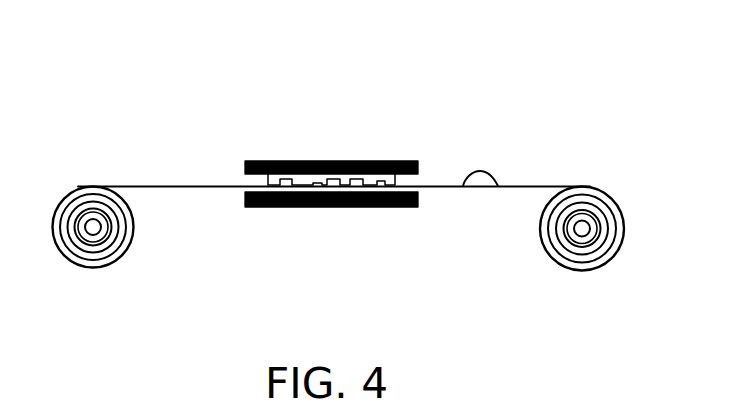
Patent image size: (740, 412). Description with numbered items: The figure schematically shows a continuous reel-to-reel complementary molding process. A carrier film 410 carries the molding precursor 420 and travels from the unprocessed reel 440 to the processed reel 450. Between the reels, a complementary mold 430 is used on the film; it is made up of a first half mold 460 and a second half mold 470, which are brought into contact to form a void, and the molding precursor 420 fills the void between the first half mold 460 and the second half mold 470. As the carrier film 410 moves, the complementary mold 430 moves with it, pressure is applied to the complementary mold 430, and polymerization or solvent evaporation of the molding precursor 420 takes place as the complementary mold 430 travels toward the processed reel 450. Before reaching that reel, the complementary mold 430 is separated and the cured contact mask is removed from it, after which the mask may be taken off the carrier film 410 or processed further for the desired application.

The carrier film 410 is at (150, 187).
The molding precursor 420 is at (485, 172).
The complementary mold 430 is at (209, 126).
The unprocessed reel 440 is at (590, 268).
The processed reel 450 is at (113, 262).
The first half mold 460 is at (365, 207).
The second half mold 470 is at (308, 161).